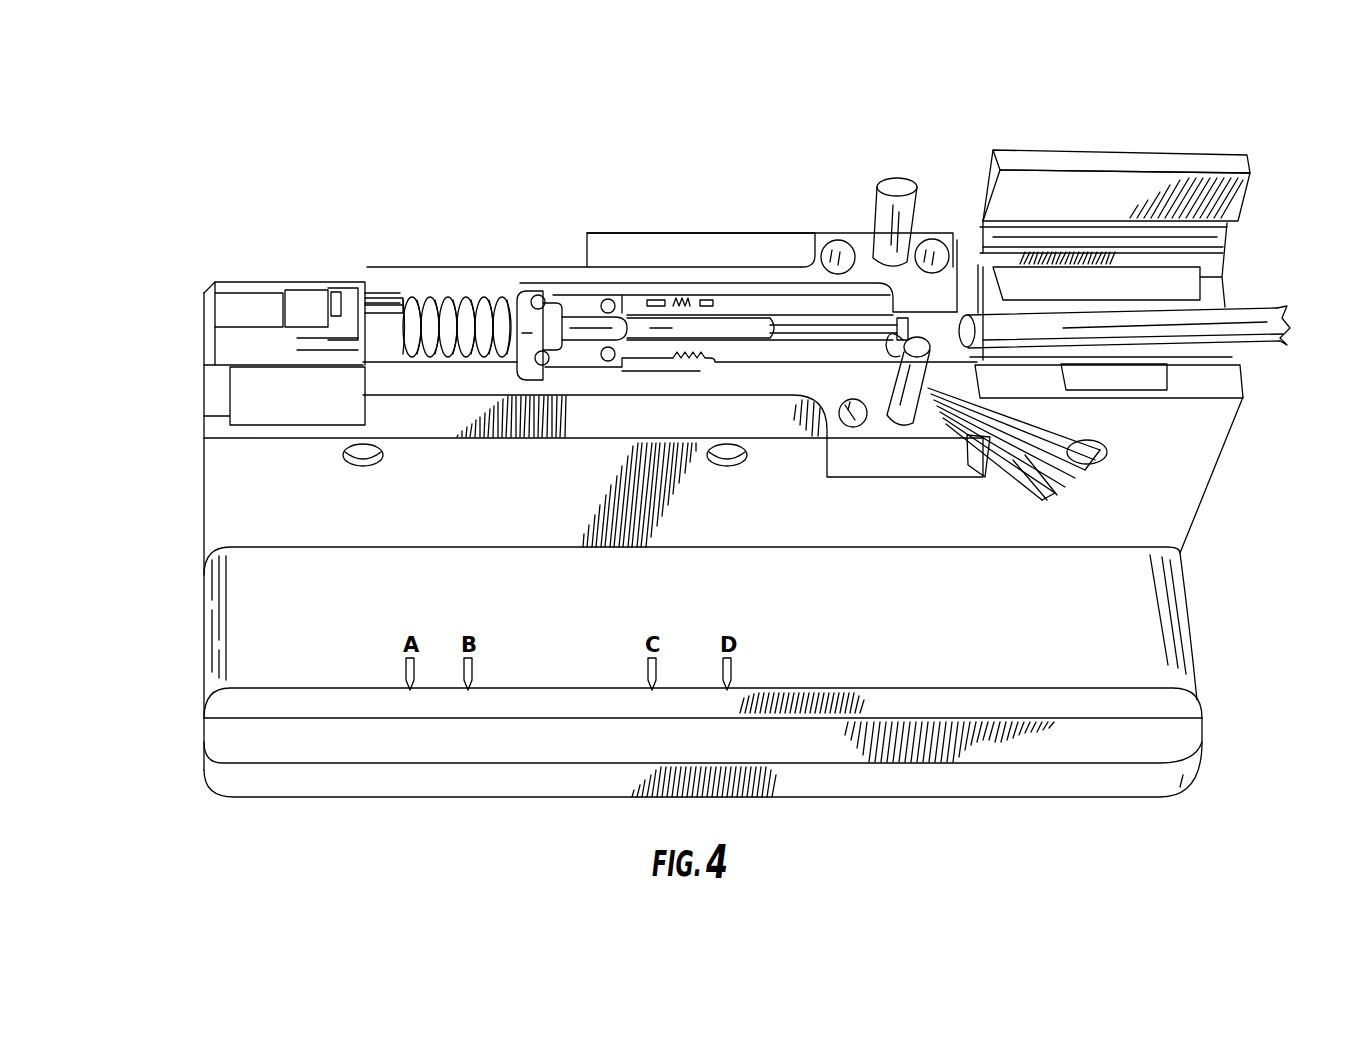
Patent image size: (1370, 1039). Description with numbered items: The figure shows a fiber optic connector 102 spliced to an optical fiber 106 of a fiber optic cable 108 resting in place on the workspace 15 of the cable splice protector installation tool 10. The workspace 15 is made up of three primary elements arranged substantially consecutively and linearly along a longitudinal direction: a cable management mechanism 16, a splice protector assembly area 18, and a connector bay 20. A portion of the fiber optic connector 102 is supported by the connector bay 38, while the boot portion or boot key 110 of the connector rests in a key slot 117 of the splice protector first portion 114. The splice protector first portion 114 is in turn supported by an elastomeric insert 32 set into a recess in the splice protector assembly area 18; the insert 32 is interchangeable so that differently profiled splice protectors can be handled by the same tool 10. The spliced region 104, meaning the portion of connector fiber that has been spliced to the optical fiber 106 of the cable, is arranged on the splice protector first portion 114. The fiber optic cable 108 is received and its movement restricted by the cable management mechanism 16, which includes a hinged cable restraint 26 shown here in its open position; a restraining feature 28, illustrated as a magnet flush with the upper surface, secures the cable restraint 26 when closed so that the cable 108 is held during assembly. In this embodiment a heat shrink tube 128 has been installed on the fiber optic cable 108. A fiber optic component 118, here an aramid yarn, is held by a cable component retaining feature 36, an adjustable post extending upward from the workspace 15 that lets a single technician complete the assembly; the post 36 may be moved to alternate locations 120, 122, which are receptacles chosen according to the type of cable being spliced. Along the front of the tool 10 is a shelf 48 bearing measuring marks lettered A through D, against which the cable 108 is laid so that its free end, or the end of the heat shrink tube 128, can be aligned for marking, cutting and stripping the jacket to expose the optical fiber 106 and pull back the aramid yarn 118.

The installation tool 10 is at (186, 551).
The workspace 15 is at (563, 197).
The cable management mechanism 16 is at (1053, 130).
The splice protector assembly area 18 is at (648, 222).
The connector bay 20 is at (238, 222).
The cable restraint 26 is at (1137, 187).
The restraining feature 28 is at (1143, 377).
The elastomeric insert 32 is at (645, 365).
The cable component retaining feature 36 is at (900, 185).
The connector bay 38 is at (253, 393).
The shelf 48 is at (355, 740).
The fiber optic connector 102 is at (308, 272).
The spliced region 104 is at (707, 330).
The optical fiber 106 is at (903, 400).
The fiber optic cable 108 is at (1253, 317).
The boot portion 110 is at (556, 292).
The splice protector first portion 114 is at (583, 353).
The key slot 117 is at (550, 357).
The fiber optic component 118 is at (1040, 500).
The alternate location 120 is at (836, 258).
The alternate location 122 is at (932, 255).
The heat shrink tube 128 is at (990, 378).